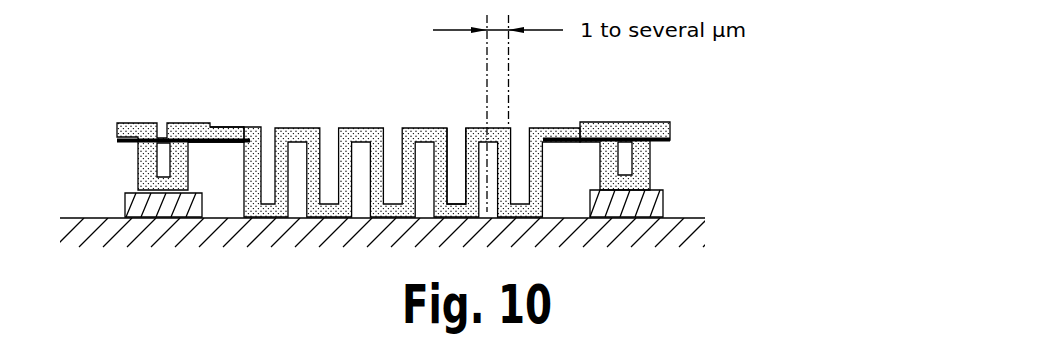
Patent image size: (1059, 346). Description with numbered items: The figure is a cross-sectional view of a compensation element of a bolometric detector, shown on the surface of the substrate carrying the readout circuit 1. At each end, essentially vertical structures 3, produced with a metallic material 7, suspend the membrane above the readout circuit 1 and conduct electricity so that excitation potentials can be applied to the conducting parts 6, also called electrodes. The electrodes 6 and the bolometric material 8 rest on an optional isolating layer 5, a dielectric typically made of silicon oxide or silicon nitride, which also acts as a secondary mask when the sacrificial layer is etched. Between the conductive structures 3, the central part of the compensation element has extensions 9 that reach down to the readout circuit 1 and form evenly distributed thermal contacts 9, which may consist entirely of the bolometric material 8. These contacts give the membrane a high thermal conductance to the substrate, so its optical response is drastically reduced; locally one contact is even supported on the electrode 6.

The readout circuit 1 is at (78, 206).
The vertical structures 3 is at (157, 108).
The isolating layer 5 is at (224, 161).
The conducting parts 6 is at (568, 110).
The metallic material 7 is at (657, 103).
The bolometric material 8 is at (354, 113).
The thermal contacts 9 is at (456, 137).